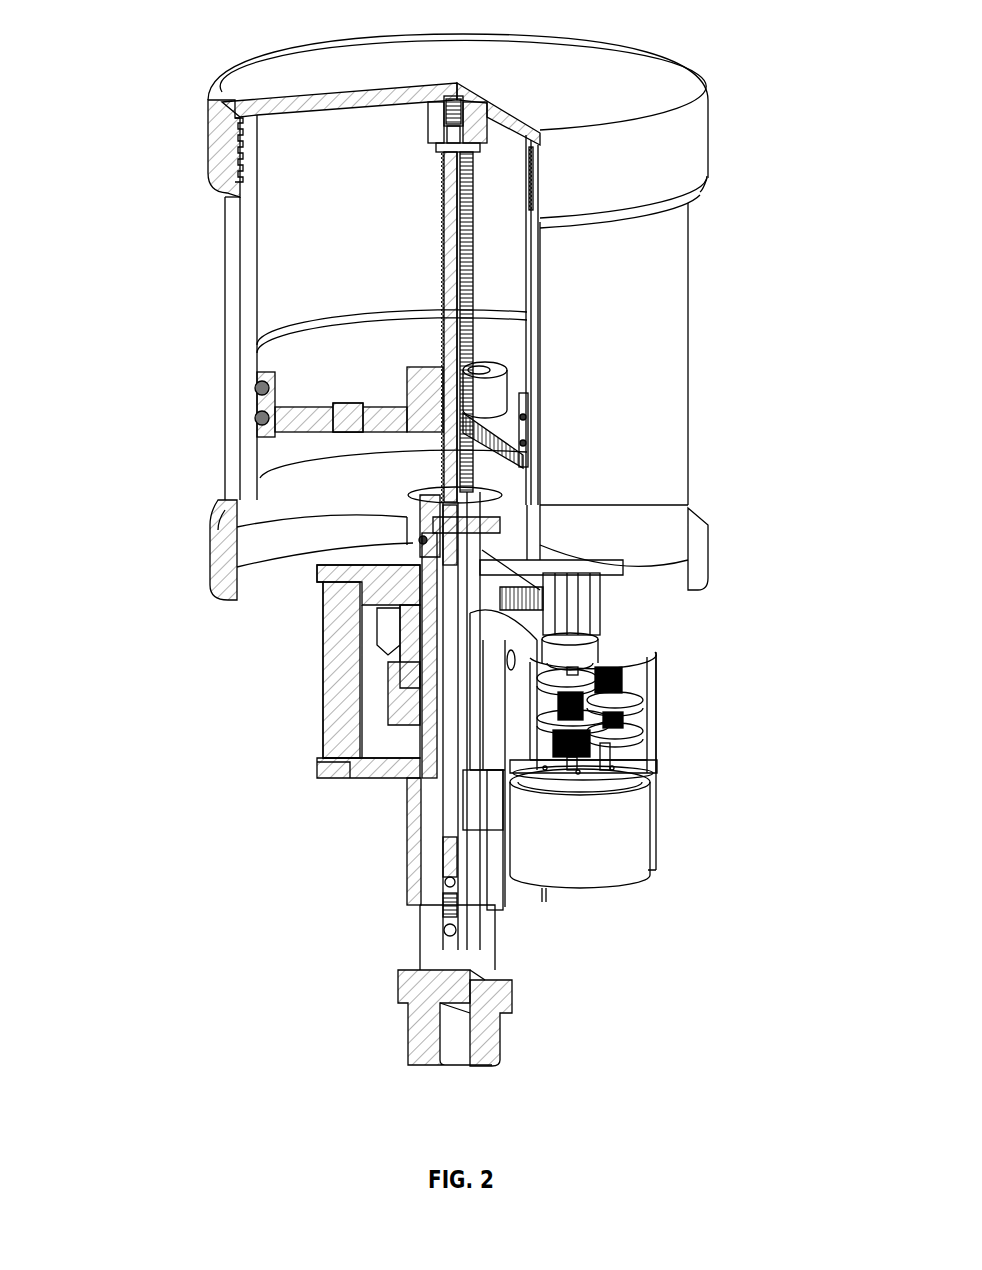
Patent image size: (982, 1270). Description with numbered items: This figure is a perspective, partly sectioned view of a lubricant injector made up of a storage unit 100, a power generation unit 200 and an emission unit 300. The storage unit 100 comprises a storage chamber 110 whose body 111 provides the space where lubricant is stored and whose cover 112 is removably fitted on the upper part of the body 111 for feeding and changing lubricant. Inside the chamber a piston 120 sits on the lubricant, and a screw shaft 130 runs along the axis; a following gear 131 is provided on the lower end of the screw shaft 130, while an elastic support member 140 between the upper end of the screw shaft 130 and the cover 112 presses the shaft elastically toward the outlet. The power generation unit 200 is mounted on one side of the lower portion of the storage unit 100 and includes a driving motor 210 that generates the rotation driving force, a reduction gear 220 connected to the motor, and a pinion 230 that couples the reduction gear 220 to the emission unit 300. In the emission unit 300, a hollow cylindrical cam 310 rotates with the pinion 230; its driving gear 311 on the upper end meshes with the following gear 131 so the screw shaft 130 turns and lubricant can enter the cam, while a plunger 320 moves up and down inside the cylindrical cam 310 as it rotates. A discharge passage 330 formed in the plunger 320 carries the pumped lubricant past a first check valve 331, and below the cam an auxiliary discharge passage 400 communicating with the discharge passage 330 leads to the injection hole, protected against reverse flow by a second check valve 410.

The storage unit 100 is at (700, 345).
The storage chamber 110 is at (107, 212).
The body 111 is at (248, 238).
The cover 112 is at (232, 148).
The piston 120 is at (280, 345).
The screw shaft 130 is at (448, 275).
The following gear 131 is at (432, 500).
The elastic support member 140 is at (438, 113).
The power generation unit 200 is at (805, 620).
The driving motor 210 is at (635, 818).
The reduction gear 220 is at (662, 720).
The pinion 230 is at (612, 623).
The emission unit 300 is at (300, 870).
The cylindrical cam 310 is at (373, 693).
The driving gear 311 is at (395, 570).
The plunger 320 is at (407, 745).
The discharge passage 330 is at (430, 775).
The first check valve 331 is at (380, 655).
The auxiliary discharge passage 400 is at (410, 935).
The second check valve 410 is at (445, 888).